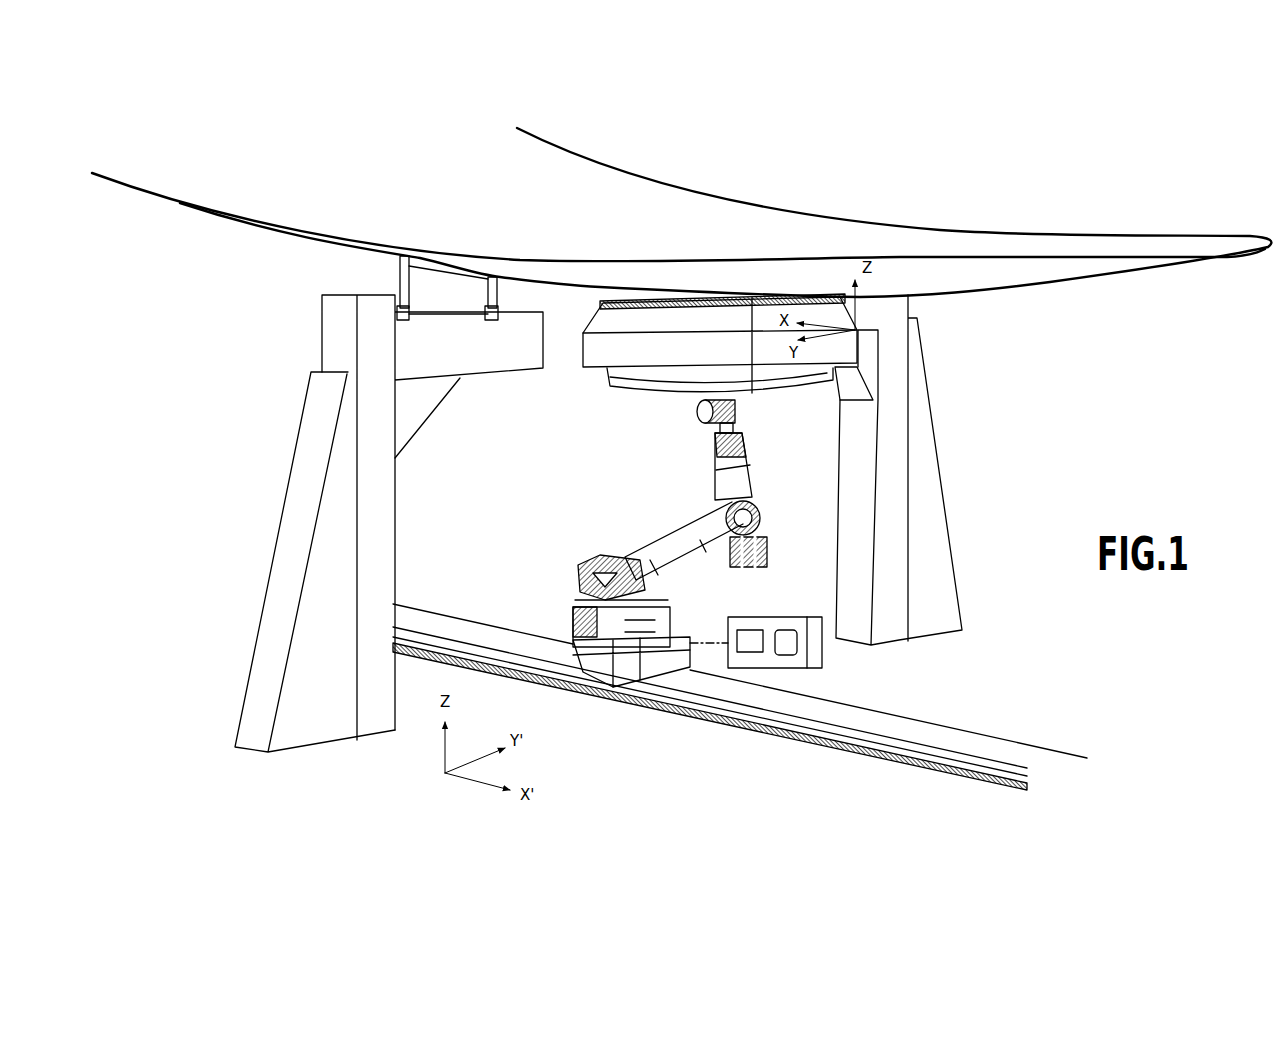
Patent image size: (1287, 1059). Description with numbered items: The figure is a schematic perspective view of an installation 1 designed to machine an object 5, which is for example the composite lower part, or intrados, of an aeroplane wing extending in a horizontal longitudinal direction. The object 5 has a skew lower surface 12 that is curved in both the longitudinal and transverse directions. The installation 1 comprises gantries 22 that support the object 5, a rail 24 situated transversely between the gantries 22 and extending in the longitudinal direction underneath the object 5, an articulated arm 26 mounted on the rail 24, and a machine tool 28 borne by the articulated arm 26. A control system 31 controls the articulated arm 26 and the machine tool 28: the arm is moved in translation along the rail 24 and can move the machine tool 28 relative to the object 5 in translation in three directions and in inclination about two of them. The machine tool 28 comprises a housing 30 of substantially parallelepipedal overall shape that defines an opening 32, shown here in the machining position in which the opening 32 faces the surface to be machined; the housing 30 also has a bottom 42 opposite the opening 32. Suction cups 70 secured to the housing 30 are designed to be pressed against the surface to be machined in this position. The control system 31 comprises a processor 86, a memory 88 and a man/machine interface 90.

The installation 1 is at (267, 178).
The object 5 is at (971, 242).
The skew lower surface 12 is at (980, 298).
The gantries 22 is at (322, 562).
The rail 24 is at (984, 743).
The articulated arm 26 is at (633, 520).
The machine tool 28 is at (580, 388).
The housing 30 is at (596, 362).
The control system 31 is at (776, 615).
The opening 32 is at (710, 300).
The bottom 42 is at (777, 395).
The suction cups 70 is at (777, 300).
The processor 86 is at (747, 653).
The memory 88 is at (785, 650).
The man/machine interface 90 is at (810, 617).